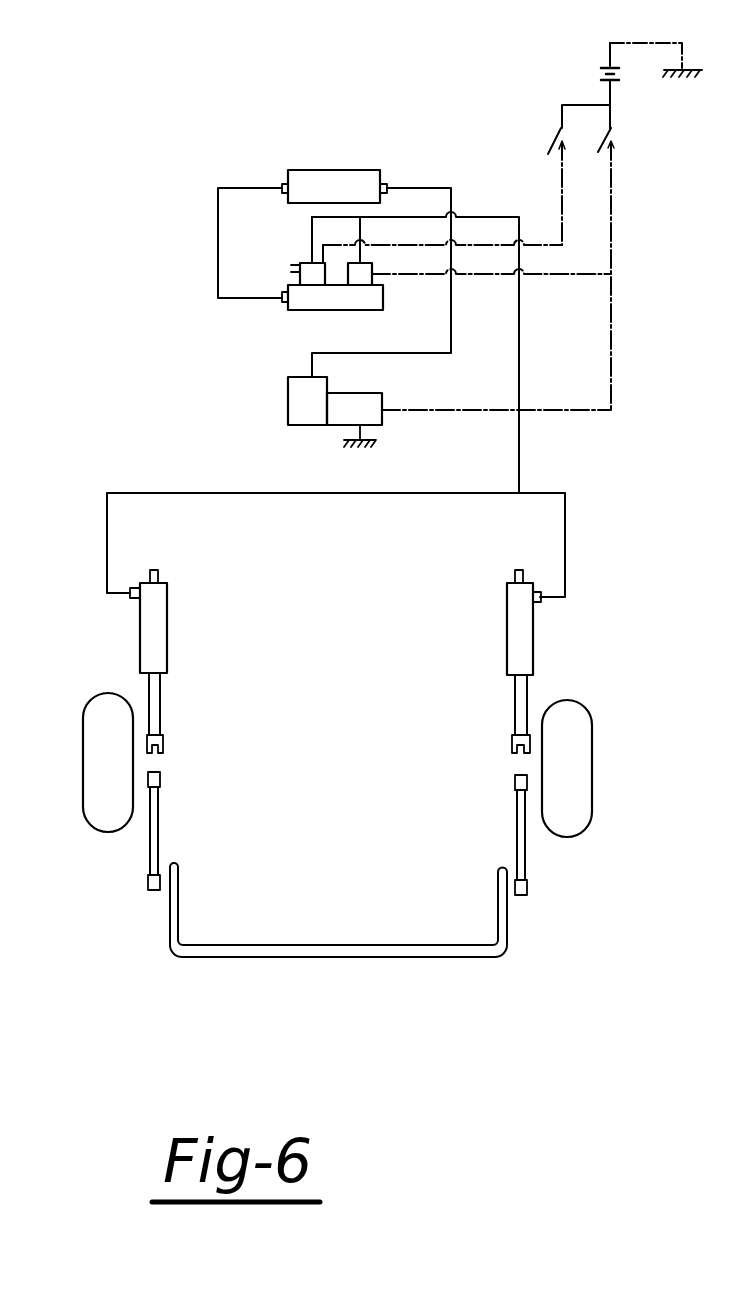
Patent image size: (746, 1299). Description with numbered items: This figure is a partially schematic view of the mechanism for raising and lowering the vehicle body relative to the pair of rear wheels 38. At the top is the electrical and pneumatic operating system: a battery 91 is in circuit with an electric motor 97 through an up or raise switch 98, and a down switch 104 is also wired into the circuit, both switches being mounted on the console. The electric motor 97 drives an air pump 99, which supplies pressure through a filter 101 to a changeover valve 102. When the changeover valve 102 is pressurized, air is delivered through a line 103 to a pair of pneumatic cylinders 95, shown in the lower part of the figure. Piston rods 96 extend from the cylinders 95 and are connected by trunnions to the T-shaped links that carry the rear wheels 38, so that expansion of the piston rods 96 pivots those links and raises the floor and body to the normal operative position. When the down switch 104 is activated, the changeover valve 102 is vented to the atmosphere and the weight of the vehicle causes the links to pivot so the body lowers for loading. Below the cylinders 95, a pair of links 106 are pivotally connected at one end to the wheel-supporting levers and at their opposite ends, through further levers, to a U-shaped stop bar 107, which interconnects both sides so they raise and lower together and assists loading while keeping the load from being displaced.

The rear wheels 38 is at (83, 773).
The battery 91 is at (607, 66).
The pneumatic cylinders 95 is at (140, 633).
The piston rods 96 is at (160, 710).
The electric motor 97 is at (372, 427).
The up or raise switch 98 is at (614, 136).
The air pump 99 is at (288, 413).
The filter 101 is at (355, 170).
The changeover valve 102 is at (300, 312).
The line 103 is at (521, 340).
The down switch 104 is at (553, 150).
The links 106 is at (160, 818).
The U-shaped stop bar 107 is at (408, 957).